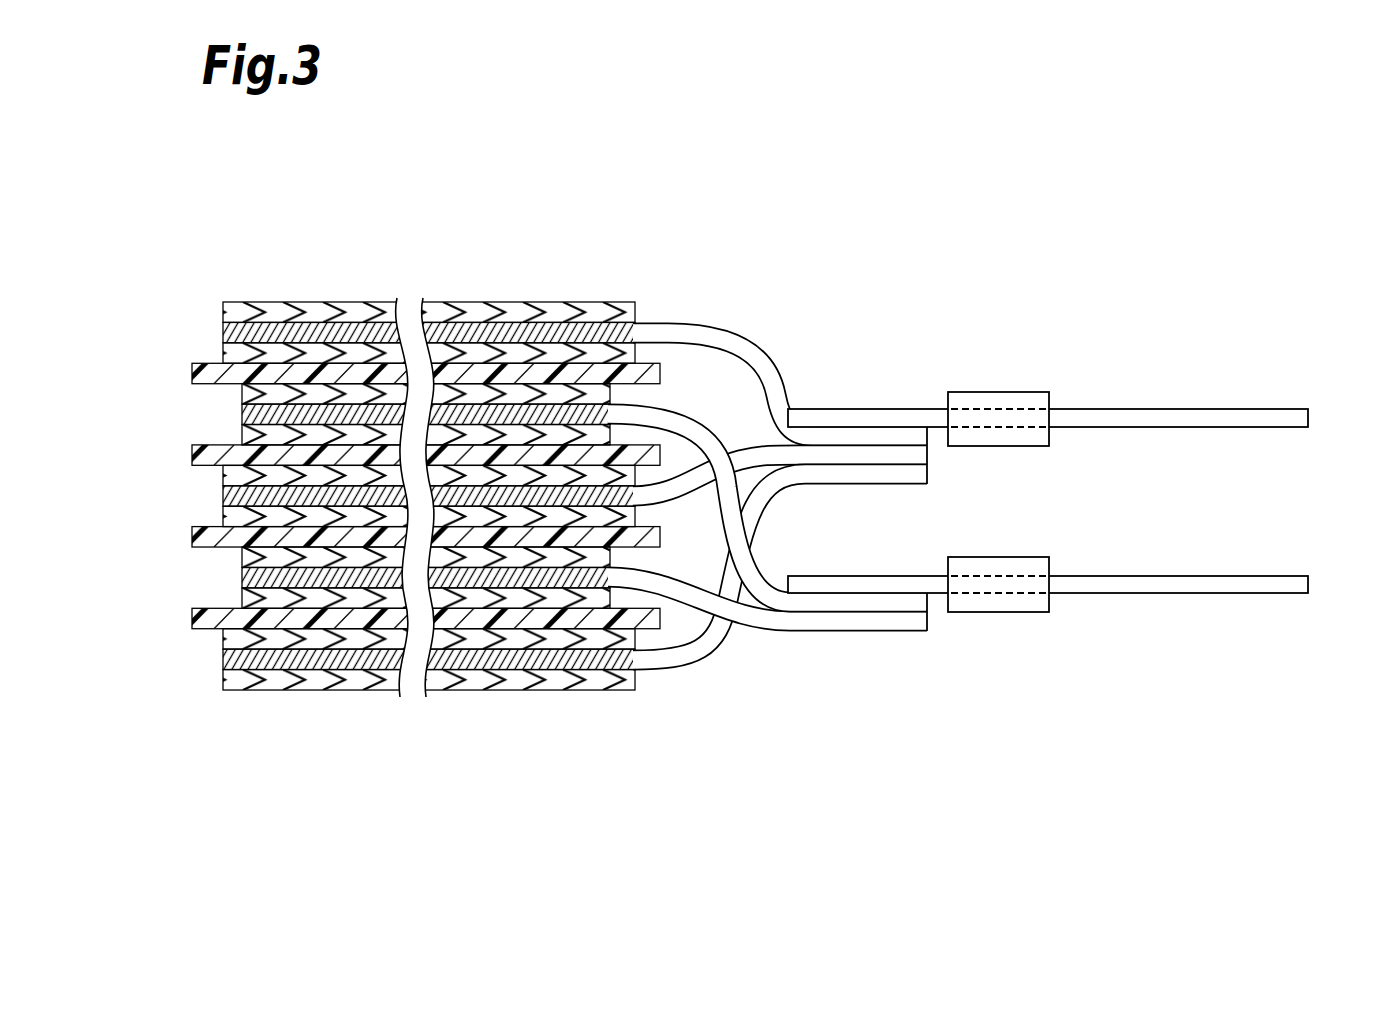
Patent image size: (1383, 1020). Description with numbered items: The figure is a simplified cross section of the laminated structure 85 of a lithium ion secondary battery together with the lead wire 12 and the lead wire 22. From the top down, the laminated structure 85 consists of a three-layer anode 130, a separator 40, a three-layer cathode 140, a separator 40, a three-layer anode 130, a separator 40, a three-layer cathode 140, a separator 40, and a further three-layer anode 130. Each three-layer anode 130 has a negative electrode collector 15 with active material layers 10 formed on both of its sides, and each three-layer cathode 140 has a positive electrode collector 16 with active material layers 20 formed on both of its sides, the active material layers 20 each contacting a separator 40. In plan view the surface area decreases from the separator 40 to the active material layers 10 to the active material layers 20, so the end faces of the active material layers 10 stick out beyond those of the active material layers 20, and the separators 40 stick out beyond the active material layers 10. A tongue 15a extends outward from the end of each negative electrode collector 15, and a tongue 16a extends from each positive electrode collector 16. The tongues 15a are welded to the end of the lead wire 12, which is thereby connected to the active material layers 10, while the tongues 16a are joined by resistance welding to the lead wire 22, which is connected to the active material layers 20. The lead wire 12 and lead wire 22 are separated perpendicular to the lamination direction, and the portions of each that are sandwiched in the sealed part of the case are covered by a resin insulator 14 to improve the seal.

The active material layer 10 is at (223, 312).
The negative electrode collector 15 is at (223, 333).
The separator 40 is at (200, 374).
The active material layer 20 is at (242, 394).
The positive electrode collector 16 is at (242, 414).
The three-layer anode 130 is at (132, 303).
The three-layer cathode 140 is at (132, 384).
The laminated structure 85 is at (63, 308).
The tongue 15a is at (713, 329).
The tongue 16a is at (715, 440).
The insulator 14 is at (1001, 392).
The lead wire 12 is at (1310, 417).
The lead wire 22 is at (1310, 584).